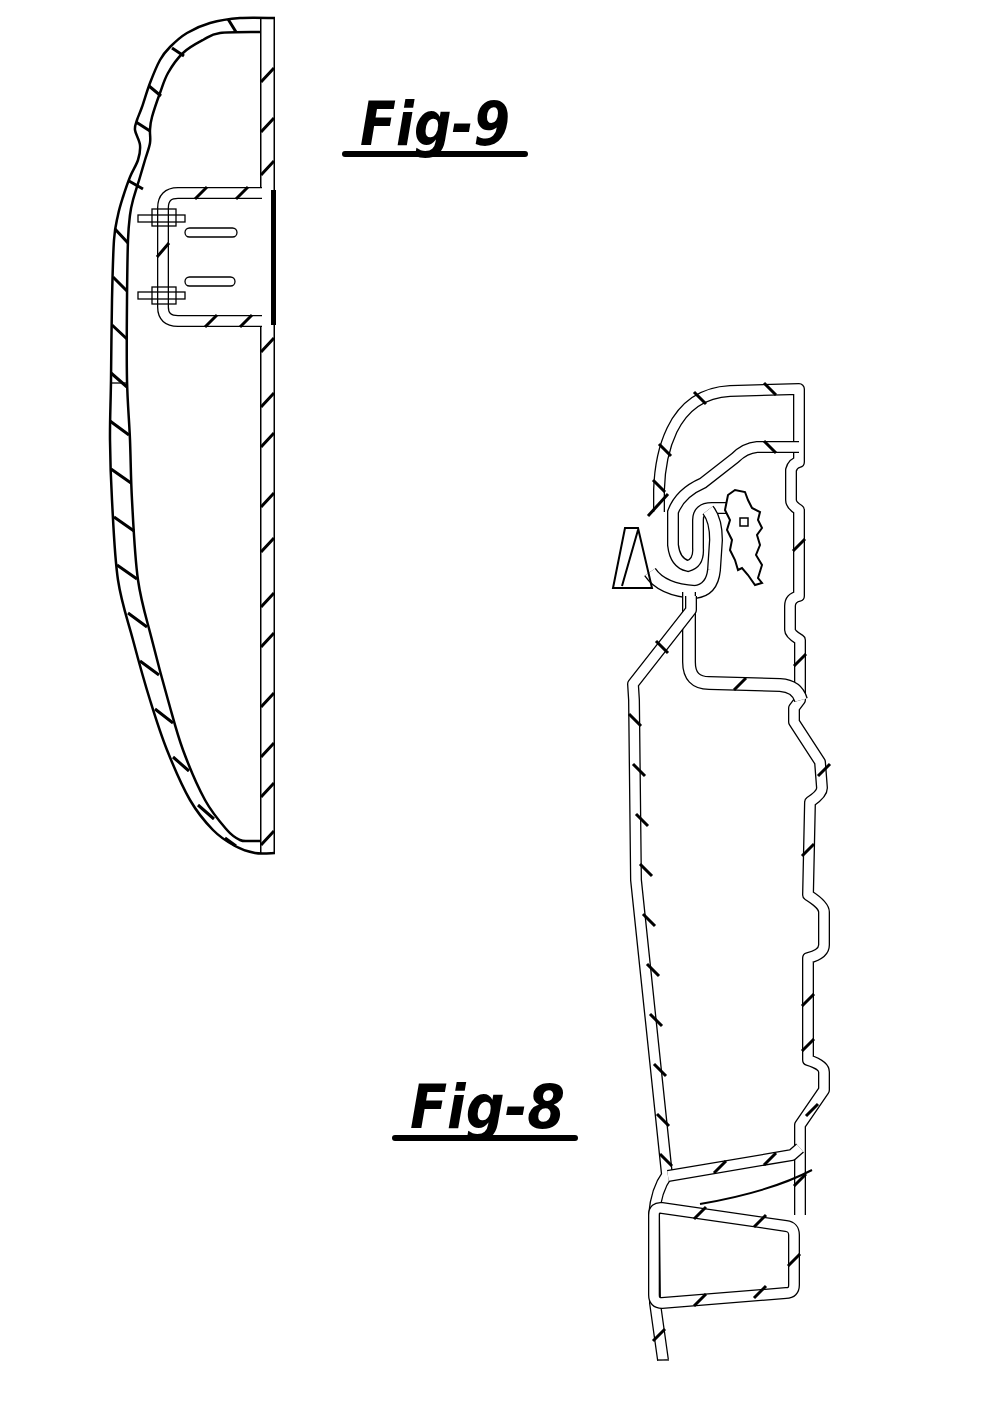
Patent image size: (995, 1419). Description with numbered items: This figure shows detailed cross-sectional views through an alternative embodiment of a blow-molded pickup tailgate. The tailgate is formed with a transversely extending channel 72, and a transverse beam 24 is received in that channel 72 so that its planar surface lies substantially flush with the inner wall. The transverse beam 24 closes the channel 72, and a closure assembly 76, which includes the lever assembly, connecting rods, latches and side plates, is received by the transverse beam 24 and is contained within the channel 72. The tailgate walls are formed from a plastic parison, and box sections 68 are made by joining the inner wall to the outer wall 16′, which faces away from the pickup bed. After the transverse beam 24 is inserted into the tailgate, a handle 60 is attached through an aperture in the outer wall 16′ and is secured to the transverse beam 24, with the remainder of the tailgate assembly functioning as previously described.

In FIG. 9, the outer wall 16′ is at (121, 580).
In FIG. 9, the transverse beam 24 is at (276, 262).
In FIG. 8, the handle 60 is at (613, 561).
In FIG. 8, the box sections 68 is at (812, 1170).
In FIG. 9, the channel 72 is at (208, 293).
In FIG. 8, the closure assembly 76 is at (760, 528).